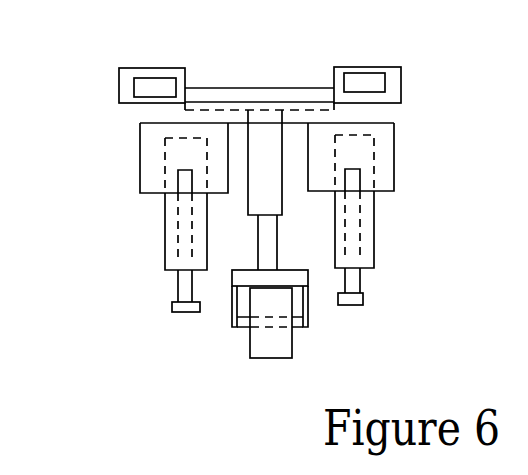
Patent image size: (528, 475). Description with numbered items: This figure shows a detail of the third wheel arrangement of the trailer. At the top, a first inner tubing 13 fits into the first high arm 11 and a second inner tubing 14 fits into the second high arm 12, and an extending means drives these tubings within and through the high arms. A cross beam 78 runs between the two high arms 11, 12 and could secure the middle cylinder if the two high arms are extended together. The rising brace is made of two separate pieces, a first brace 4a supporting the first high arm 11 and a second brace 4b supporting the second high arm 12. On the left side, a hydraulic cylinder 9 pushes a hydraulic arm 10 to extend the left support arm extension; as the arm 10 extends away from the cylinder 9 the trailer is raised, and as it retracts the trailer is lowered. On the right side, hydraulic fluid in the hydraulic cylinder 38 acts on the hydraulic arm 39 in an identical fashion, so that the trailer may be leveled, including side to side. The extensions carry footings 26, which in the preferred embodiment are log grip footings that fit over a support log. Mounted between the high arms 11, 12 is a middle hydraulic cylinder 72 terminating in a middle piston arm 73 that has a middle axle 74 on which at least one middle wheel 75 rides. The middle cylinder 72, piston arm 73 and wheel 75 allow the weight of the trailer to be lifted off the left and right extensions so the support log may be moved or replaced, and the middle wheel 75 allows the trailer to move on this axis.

The first brace 4a is at (140, 157).
The second brace 4b is at (383, 154).
The hydraulic cylinder 9 is at (167, 236).
The hydraulic arm 10 is at (188, 284).
The first high arm 11 is at (125, 85).
The second high arm 12 is at (393, 82).
The first inner tubing 13 is at (149, 81).
The second inner tubing 14 is at (350, 80).
The footing 26 is at (177, 306).
The hydraulic cylinder 38 is at (372, 228).
The hydraulic arm 39 is at (353, 283).
The middle hydraulic cylinder 72 is at (266, 150).
The middle piston arm 73 is at (268, 236).
The middle axle 74 is at (237, 324).
The middle wheel 75 is at (273, 347).
The cross beam 78 is at (227, 96).